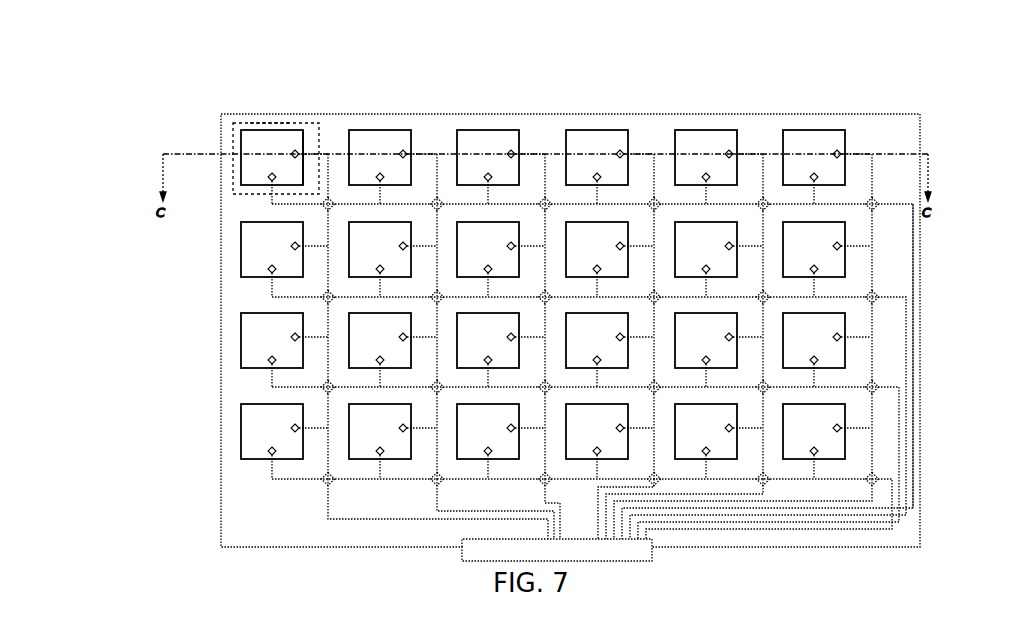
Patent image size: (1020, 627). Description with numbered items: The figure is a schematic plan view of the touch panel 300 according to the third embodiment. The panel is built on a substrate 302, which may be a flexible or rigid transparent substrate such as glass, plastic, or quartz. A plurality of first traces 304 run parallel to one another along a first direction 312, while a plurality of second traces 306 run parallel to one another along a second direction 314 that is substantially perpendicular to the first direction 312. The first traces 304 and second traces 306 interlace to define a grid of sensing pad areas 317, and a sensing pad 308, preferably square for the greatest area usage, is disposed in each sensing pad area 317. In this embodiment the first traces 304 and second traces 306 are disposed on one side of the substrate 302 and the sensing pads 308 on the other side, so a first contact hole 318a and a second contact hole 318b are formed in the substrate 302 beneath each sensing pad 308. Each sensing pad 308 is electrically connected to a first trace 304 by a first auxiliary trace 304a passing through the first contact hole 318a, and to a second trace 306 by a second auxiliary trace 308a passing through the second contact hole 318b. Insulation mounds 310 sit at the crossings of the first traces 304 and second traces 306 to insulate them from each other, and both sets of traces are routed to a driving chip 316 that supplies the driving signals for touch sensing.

The touch panel 300 is at (177, 93).
The substrate 302 is at (238, 122).
The first traces 304 is at (328, 508).
The first auxiliary trace 304a is at (304, 145).
The second traces 306 is at (895, 203).
The sensing pad 308 is at (243, 140).
The pixel electrode connection 308a is at (268, 187).
The insulation mound 310 is at (331, 199).
The first direction 312 is at (197, 302).
The second direction 314 is at (476, 98).
The driving chip 316 is at (655, 549).
The sensing pad area 317 is at (267, 122).
The first contact hole 318a is at (295, 146).
The second contact hole 318b is at (268, 175).